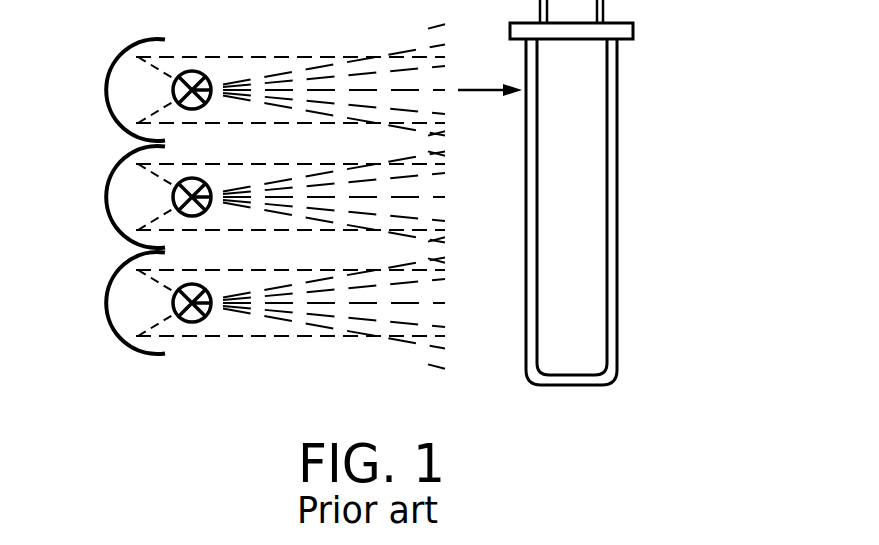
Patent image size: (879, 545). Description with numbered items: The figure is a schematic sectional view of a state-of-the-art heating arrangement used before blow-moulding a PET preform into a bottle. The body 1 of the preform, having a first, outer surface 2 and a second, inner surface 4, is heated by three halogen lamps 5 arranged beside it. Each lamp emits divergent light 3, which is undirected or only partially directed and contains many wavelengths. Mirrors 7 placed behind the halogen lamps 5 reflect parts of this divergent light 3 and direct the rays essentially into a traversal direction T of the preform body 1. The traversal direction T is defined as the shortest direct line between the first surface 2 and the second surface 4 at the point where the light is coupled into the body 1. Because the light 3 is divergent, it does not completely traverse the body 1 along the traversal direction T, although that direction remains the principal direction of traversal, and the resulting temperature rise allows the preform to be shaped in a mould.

The body 1 is at (633, 192).
The first, outer surface 2 is at (617, 190).
The divergent light 3 is at (308, 80).
The second, inner surface 4 is at (608, 268).
The halogen lamps 5 is at (192, 71).
The mirrors 7 is at (122, 80).
The traversal direction T is at (481, 88).